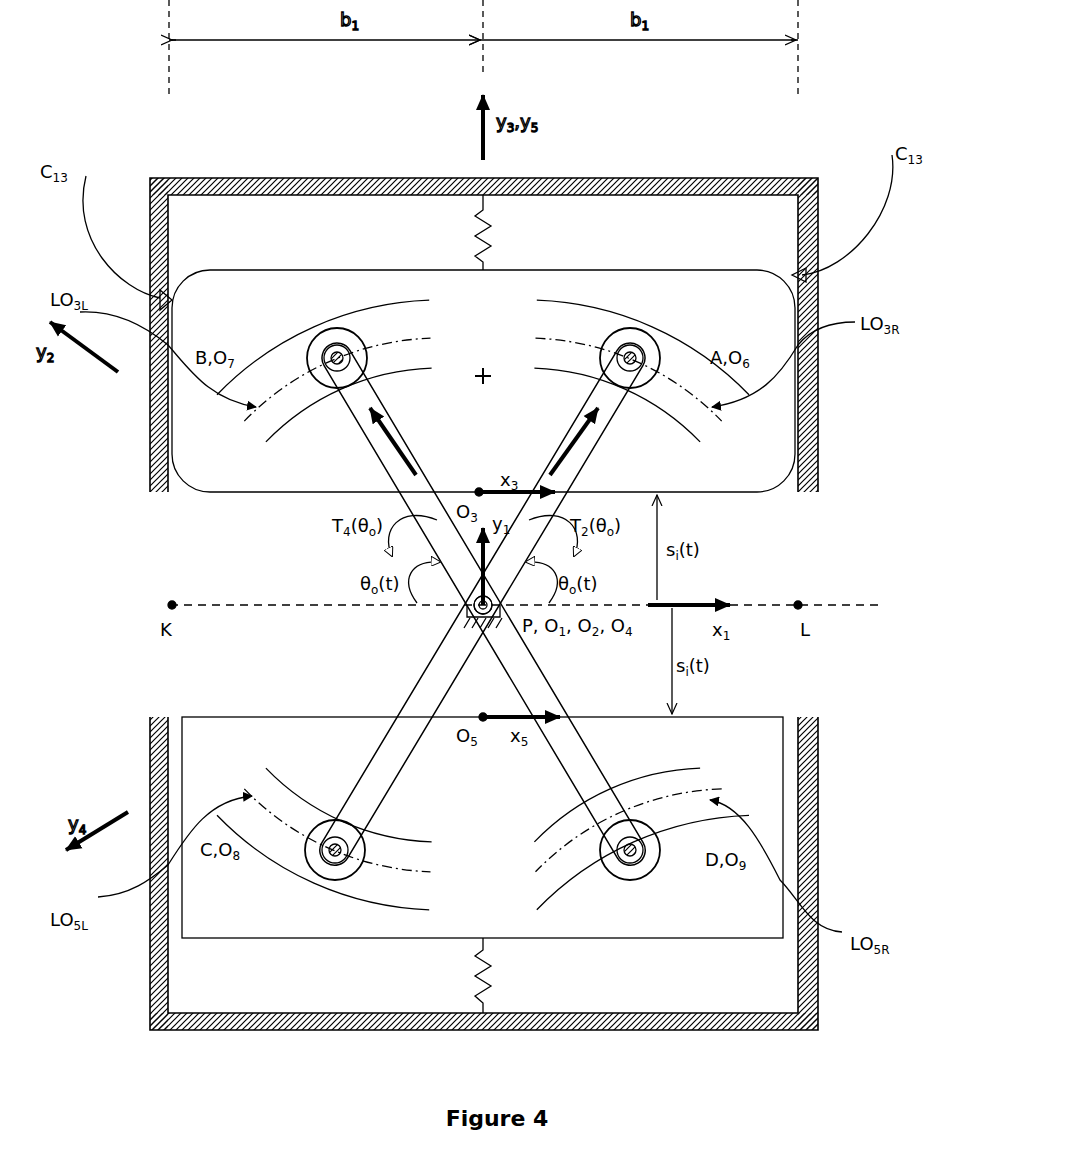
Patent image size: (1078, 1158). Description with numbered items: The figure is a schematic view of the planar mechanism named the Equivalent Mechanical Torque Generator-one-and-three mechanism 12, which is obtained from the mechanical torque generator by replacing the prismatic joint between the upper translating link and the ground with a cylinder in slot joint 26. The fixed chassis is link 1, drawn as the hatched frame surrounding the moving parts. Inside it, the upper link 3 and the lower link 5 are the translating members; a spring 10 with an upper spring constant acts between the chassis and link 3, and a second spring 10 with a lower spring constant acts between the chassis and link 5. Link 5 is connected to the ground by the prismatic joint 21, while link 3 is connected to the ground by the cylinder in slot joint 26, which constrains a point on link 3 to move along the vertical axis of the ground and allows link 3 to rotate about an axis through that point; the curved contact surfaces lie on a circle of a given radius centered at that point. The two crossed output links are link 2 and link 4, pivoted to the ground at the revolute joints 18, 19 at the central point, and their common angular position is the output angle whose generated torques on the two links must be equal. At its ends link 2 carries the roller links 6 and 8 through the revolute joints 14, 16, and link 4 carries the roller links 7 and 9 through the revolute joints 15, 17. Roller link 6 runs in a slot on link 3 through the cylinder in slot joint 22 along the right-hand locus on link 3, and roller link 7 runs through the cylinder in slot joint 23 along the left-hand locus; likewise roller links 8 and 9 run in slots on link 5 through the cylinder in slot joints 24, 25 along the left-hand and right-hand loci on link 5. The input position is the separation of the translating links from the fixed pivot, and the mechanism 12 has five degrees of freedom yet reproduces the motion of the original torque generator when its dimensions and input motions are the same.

The link 1 is at (818, 425).
The link 2 is at (584, 482).
The link 3 is at (483, 343).
The link 4 is at (375, 425).
The link 5 is at (482, 865).
The link 6 is at (640, 348).
The link 7 is at (312, 348).
The link 8 is at (315, 865).
The link 9 is at (650, 870).
The spring 10 is at (496, 228).
The Equivalent Mechanical Torque Generator-1&3 mechanism 12 is at (128, 180).
The revolute joint that connects link 2 and link 6 14 is at (604, 368).
The revolute joint that connects link 4 and link 7 15 is at (360, 372).
The revolute joint that connects link 2 and link 8 16 is at (360, 830).
The revolute joint that connects link 4 and link 9 17 is at (610, 830).
The revolute joint that connects link 1 and link 2 18 is at (363, 624).
The revolute joint that connects link 1 and link 4 19 is at (468, 610).
The prismatic joint that connects link 1 and link 5 21 is at (790, 798).
The cylinder in slot joint that connects link 3 and link 6 22 is at (632, 345).
The cylinder in slot joint that connects link 3 and link 7 23 is at (337, 345).
The cylinder in slot joint that connects link 5 and link 8 24 is at (335, 870).
The cylinder in slot joint that connects link 5 and link 9 25 is at (643, 870).
The cylinder in slot joint that connects link 1 and link 3 26 is at (800, 375).